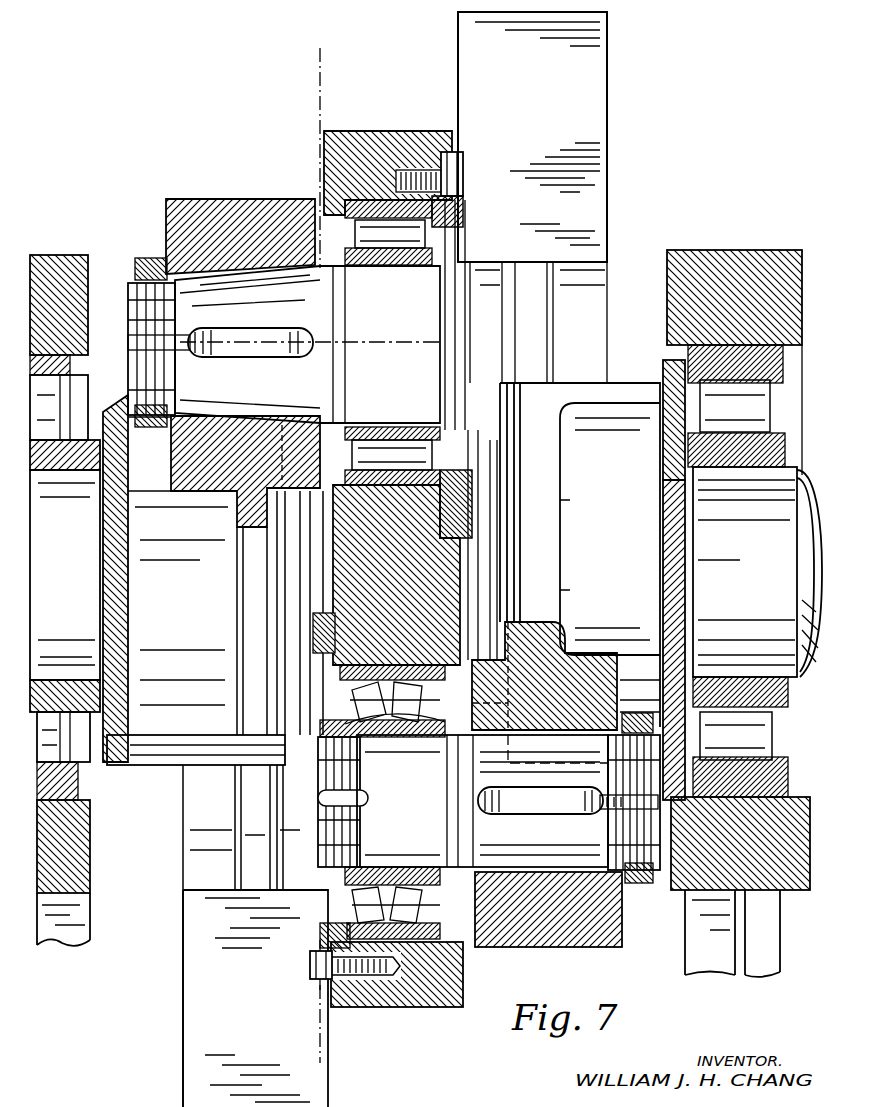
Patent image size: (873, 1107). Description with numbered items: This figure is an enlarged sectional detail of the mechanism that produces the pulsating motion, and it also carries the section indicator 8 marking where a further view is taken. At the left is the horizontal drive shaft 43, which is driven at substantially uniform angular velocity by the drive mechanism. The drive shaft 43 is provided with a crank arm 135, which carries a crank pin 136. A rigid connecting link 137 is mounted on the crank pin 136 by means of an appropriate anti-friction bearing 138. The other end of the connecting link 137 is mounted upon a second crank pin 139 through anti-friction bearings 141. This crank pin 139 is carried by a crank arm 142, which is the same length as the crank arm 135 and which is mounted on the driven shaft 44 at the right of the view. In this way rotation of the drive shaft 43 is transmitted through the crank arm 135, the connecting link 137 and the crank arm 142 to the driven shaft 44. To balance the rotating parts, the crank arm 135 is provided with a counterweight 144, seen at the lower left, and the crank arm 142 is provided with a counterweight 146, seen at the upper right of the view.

The section line 8- 8 is at (320, 48).
The horizontal drive shaft 43 is at (47, 600).
The driven shaft 44 is at (758, 592).
The crank arm 135 is at (227, 226).
The crank pin 136 is at (307, 314).
The rigid connecting link 137 is at (370, 168).
The anti-friction bearing 138 is at (388, 478).
The crank pin 139 is at (590, 842).
The anti-friction bearings 141 is at (418, 705).
The crank arm 142 is at (549, 922).
The counterweight 144 is at (218, 1035).
The counterweight 146 is at (575, 103).